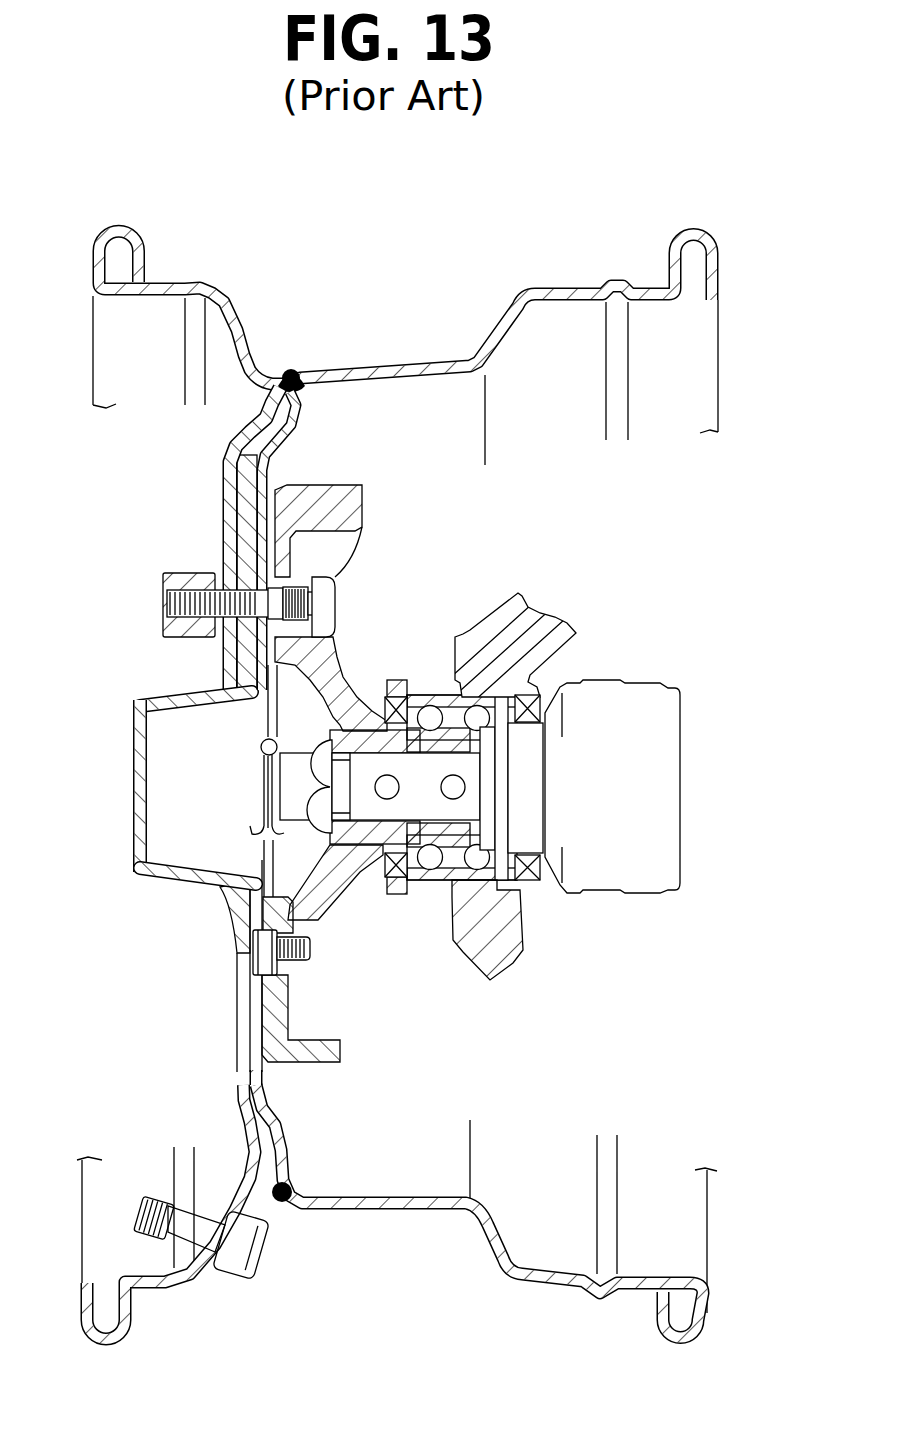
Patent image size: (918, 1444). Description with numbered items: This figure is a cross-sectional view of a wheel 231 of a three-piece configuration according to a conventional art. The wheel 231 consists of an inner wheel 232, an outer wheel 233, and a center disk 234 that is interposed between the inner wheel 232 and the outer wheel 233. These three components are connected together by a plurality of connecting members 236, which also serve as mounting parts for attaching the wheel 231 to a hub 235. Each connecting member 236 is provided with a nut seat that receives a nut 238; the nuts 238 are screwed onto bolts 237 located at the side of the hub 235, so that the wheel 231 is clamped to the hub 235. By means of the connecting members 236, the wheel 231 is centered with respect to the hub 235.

The wheel 231 is at (490, 208).
The inner wheel 232 is at (448, 352).
The outer wheel 233 is at (220, 280).
The center disk 234 is at (240, 513).
The hub 235 is at (310, 882).
The connecting members 236 is at (217, 567).
The bolts 237 is at (338, 590).
The nuts 238 is at (168, 577).